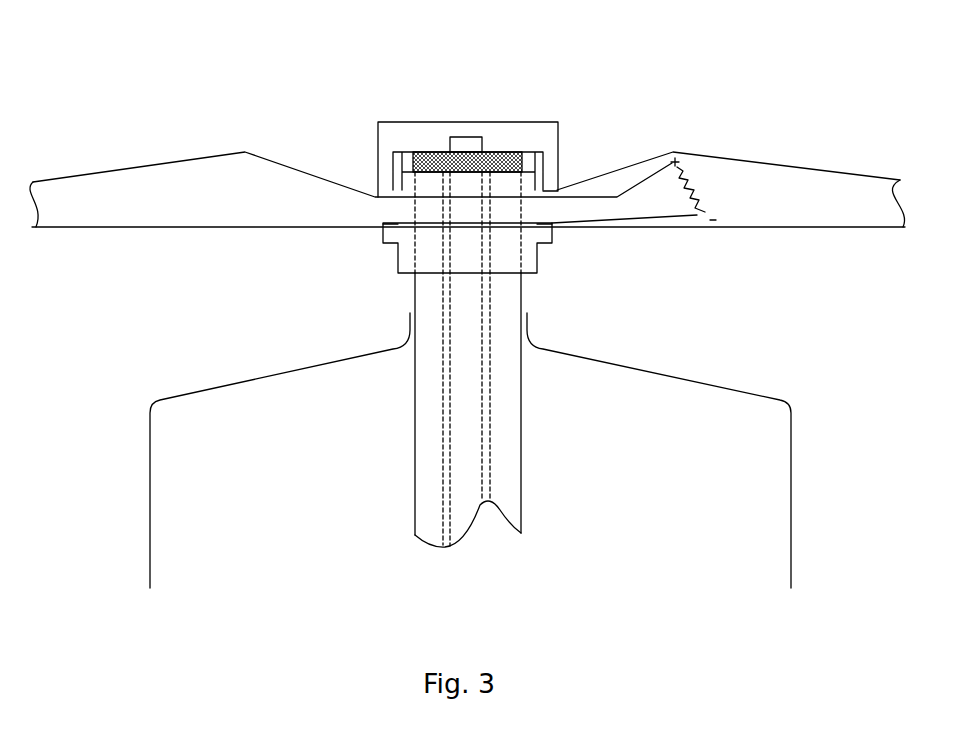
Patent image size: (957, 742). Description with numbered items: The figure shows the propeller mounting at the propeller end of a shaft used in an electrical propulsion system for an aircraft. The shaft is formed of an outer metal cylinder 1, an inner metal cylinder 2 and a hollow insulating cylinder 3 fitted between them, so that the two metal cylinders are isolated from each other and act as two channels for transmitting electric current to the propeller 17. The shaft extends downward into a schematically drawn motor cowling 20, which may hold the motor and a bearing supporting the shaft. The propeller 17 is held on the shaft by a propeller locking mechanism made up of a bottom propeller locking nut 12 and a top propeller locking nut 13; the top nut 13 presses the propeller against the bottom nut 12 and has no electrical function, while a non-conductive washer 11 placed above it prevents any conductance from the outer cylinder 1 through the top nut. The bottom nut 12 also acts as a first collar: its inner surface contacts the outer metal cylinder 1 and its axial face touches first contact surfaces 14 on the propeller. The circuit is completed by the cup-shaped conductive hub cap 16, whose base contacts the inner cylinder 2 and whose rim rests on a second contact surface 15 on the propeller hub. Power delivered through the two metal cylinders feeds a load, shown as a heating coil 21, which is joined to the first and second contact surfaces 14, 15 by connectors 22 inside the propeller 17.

The outer metal cylinder 1 is at (415, 350).
The inner metal cylinder 2 is at (467, 137).
The insulating cylinder 3 is at (488, 435).
The non-conductive washer 11 is at (508, 160).
The bottom propeller locking nut 12 is at (397, 247).
The top propeller locking nut 13 is at (393, 165).
The first contact surfaces 14 is at (383, 226).
The second contact surface 15 is at (383, 192).
The hub cap 16 is at (544, 128).
The propeller 17 is at (103, 193).
The motor cowling 20 is at (157, 497).
The heating coil 21 is at (710, 185).
The connectors 22 is at (680, 221).